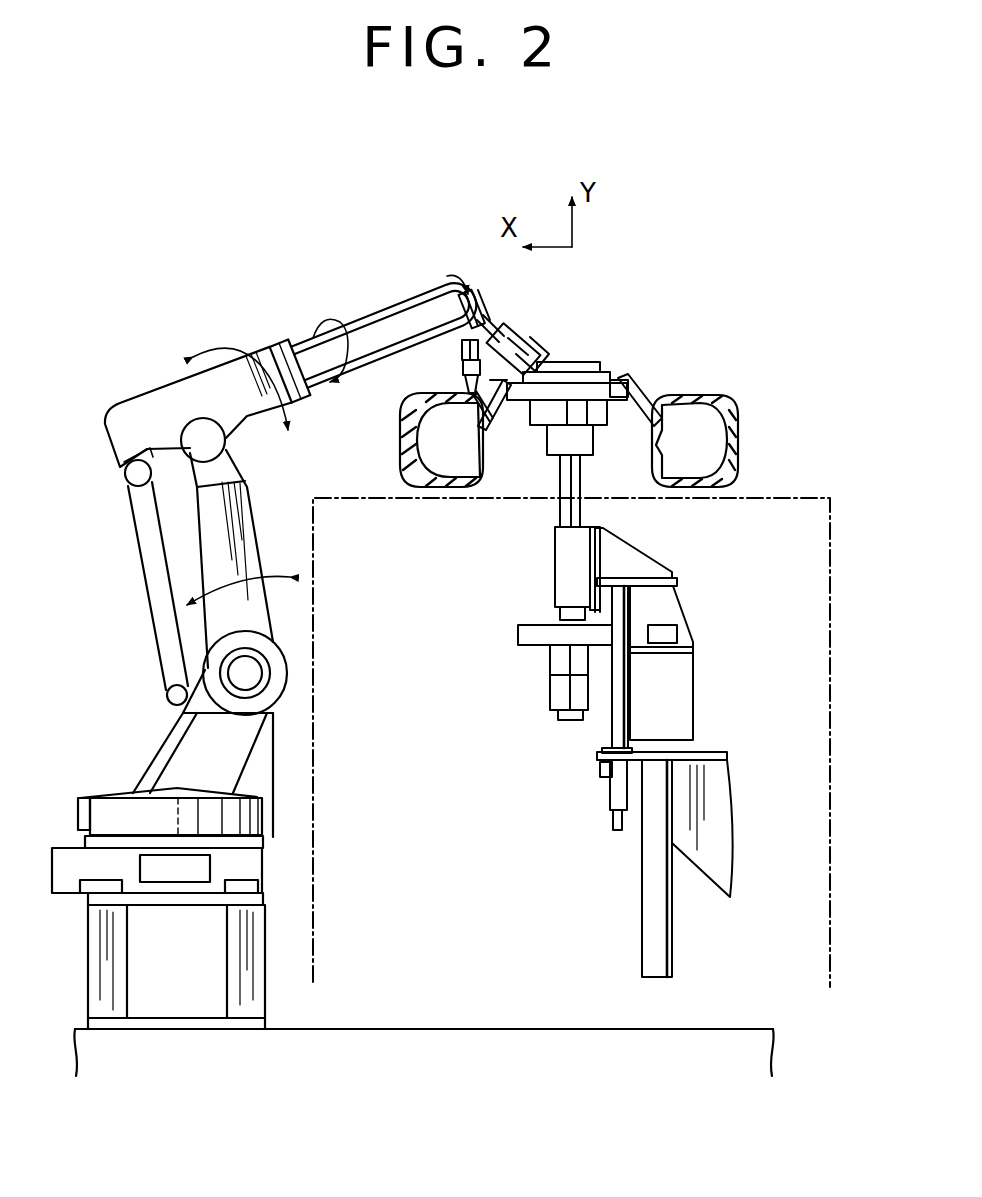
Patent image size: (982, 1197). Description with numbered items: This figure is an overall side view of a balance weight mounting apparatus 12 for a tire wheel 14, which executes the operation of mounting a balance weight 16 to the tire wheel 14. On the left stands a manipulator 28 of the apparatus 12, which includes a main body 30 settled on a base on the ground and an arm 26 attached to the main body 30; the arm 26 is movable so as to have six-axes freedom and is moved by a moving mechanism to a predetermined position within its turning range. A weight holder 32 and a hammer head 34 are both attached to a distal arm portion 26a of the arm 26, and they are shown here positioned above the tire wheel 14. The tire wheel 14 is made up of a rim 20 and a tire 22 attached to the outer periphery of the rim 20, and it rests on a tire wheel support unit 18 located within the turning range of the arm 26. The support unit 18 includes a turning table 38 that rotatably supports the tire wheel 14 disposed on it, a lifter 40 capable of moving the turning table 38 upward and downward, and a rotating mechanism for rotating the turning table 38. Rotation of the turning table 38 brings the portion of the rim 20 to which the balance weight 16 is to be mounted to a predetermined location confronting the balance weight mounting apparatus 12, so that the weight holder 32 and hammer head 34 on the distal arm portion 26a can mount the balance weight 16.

The balance weight mounting apparatus 12 is at (148, 610).
The tire wheel 14 is at (634, 362).
The balance weight 16 is at (489, 408).
The tire wheel support unit 18 is at (766, 497).
The rim 20 is at (470, 391).
The tire 22 is at (738, 410).
The arm 26 is at (374, 314).
The distal arm portion 26a is at (495, 330).
The manipulator 28 is at (151, 390).
The main body 30 is at (95, 945).
The weight holder 32 is at (457, 358).
The hammer head 34 is at (524, 363).
The turning table 38 is at (612, 392).
The lifter 40 is at (696, 700).